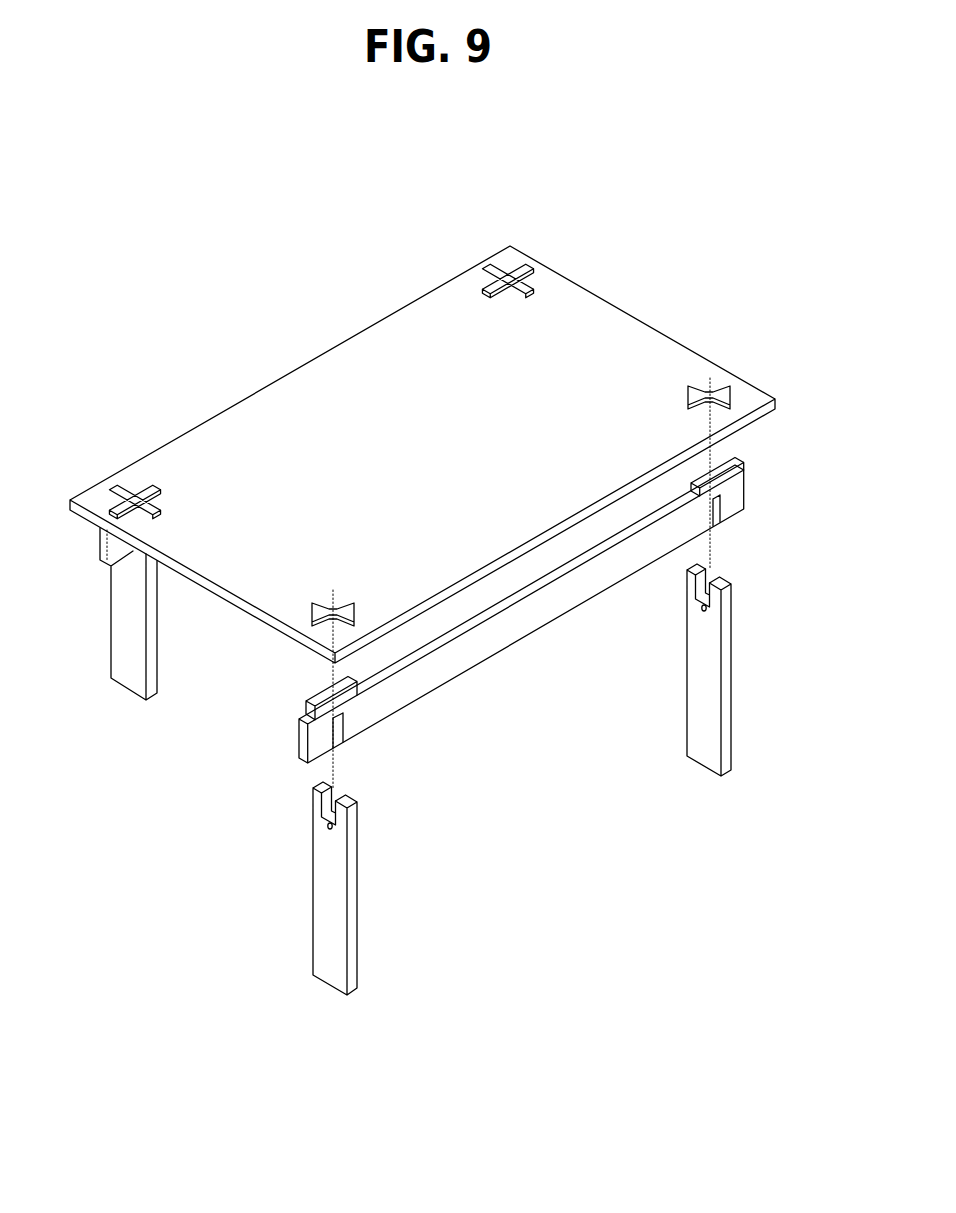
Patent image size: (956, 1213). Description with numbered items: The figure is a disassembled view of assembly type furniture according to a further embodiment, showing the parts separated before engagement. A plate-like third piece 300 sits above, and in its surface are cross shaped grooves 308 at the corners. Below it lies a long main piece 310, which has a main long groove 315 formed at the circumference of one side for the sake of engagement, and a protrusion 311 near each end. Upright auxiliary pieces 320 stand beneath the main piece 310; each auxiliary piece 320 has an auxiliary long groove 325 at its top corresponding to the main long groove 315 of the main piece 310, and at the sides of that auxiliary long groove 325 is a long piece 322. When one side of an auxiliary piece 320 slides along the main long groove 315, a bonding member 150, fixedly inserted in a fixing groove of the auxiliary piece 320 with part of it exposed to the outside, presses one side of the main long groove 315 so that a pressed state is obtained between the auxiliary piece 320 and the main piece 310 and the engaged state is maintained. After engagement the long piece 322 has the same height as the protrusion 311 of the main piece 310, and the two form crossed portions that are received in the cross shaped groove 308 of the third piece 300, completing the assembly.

The panel 300 is at (340, 374).
The main piece 310 is at (500, 636).
The protrusion 311 is at (522, 262).
The main long groove 315 is at (340, 744).
The auxiliary piece 320 is at (327, 927).
The long piece 322 is at (492, 270).
The auxiliary long groove 325 is at (330, 805).
The bonding member 150 is at (330, 828).
The cross shaped groove 308 is at (716, 383).